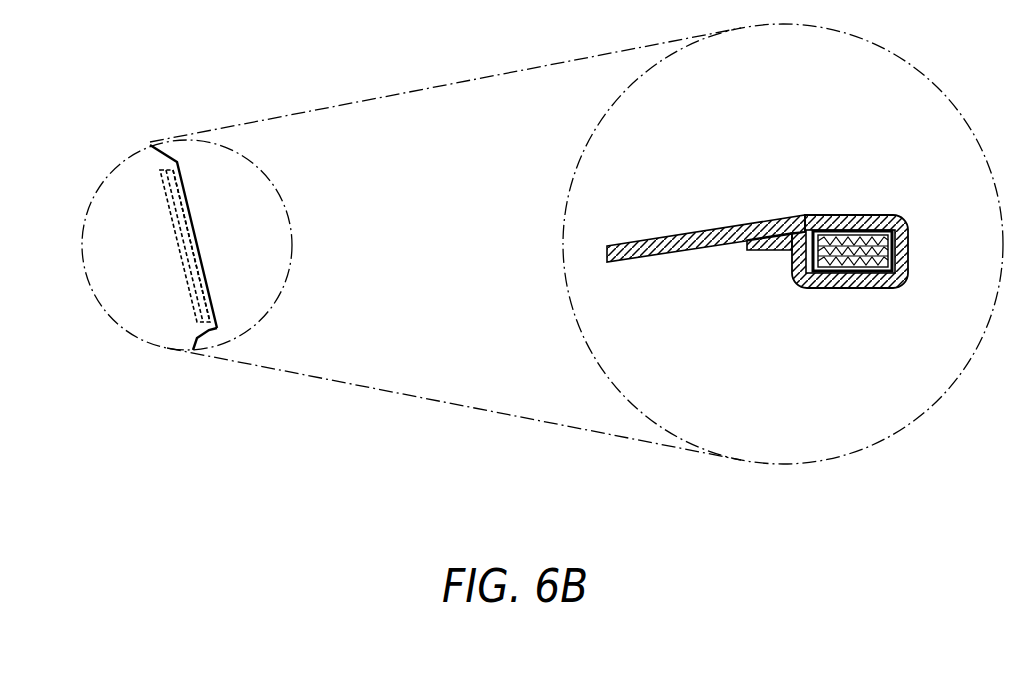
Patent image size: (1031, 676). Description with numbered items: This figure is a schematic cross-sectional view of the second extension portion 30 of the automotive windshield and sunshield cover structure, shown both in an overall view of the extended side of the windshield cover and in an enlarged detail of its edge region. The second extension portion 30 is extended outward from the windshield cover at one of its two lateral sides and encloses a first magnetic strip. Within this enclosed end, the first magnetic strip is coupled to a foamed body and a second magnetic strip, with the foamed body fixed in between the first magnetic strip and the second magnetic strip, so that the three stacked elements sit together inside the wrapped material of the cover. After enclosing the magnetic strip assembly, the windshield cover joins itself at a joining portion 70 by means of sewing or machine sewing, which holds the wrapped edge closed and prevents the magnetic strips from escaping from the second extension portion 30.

The second extension portion 30 is at (207, 336).
The joining portion 70 is at (774, 220).